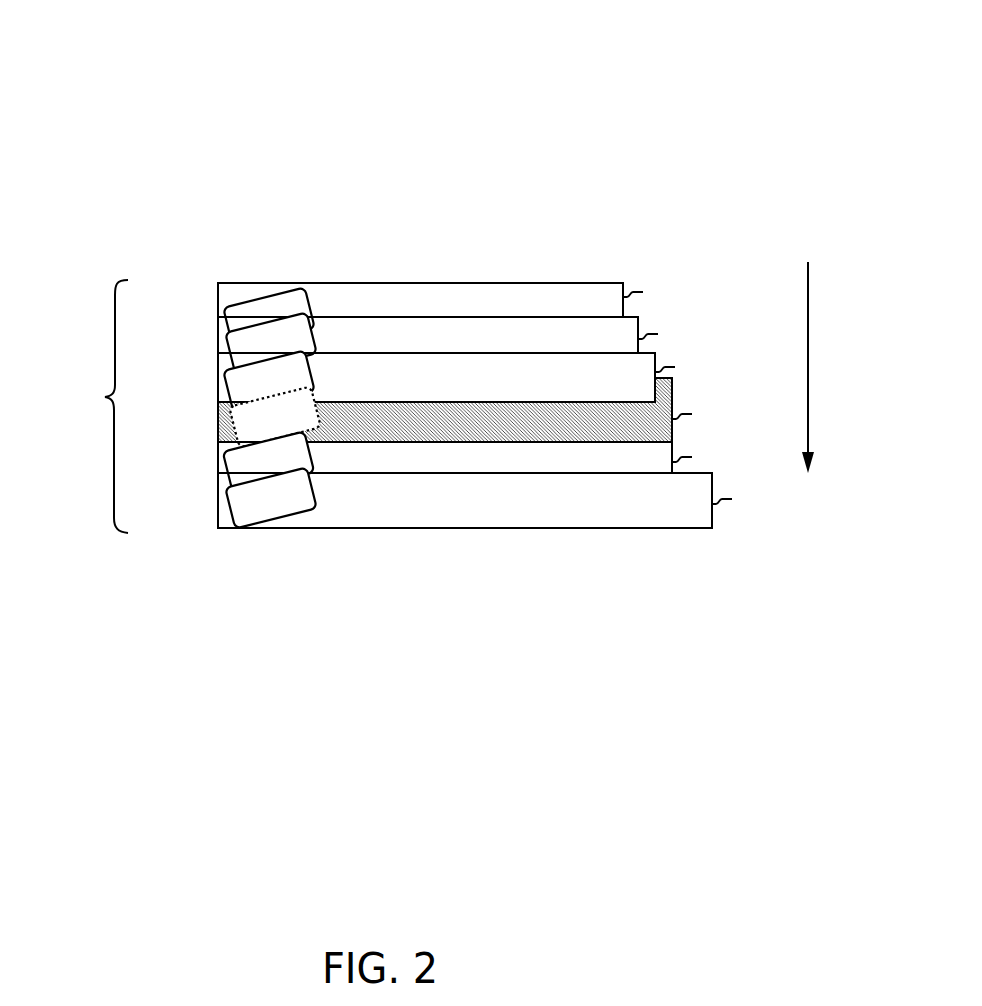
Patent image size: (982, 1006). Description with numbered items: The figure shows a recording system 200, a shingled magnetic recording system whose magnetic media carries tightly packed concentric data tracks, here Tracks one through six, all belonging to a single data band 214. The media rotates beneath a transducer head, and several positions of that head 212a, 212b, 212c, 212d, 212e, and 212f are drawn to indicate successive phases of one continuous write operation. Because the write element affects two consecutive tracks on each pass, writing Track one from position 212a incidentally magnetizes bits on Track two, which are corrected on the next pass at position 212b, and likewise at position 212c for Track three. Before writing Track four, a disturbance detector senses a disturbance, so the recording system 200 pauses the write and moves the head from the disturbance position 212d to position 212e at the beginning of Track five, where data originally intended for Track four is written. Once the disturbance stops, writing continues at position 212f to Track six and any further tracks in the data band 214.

The recording system 200 is at (186, 101).
The transducer head position 212a is at (218, 307).
The transducer head position 212b is at (218, 343).
The transducer head position 212c is at (218, 377).
The disturbance position 212d is at (218, 412).
The transducer head position 212e is at (218, 460).
The transducer head position 212f is at (218, 495).
The data band 214 is at (105, 397).